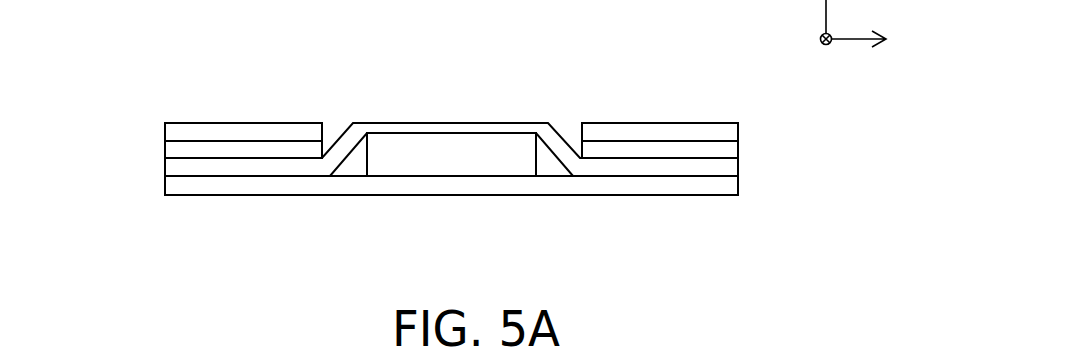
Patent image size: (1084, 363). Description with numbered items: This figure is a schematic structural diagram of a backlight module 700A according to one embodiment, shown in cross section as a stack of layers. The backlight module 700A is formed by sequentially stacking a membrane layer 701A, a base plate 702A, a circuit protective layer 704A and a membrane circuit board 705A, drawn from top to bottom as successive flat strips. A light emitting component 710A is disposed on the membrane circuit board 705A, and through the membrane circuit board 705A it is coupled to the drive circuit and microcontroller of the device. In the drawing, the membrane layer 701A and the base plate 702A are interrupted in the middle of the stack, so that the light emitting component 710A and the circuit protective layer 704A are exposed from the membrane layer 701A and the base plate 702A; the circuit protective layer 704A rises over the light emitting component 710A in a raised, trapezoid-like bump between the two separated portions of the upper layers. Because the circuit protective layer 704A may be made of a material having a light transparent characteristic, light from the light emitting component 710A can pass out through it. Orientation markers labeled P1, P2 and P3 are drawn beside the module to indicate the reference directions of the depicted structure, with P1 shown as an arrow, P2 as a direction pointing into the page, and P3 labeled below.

The backlight module 700A is at (458, 183).
The membrane layer 701A is at (170, 134).
The base plate 702A is at (170, 145).
The circuit protective layer 704A is at (170, 167).
The membrane circuit board 705A is at (170, 188).
The light emitting component 710A is at (446, 165).
The first direction P1 is at (874, 39).
The second direction P2 is at (808, 35).
The third direction P3 is at (834, 347).